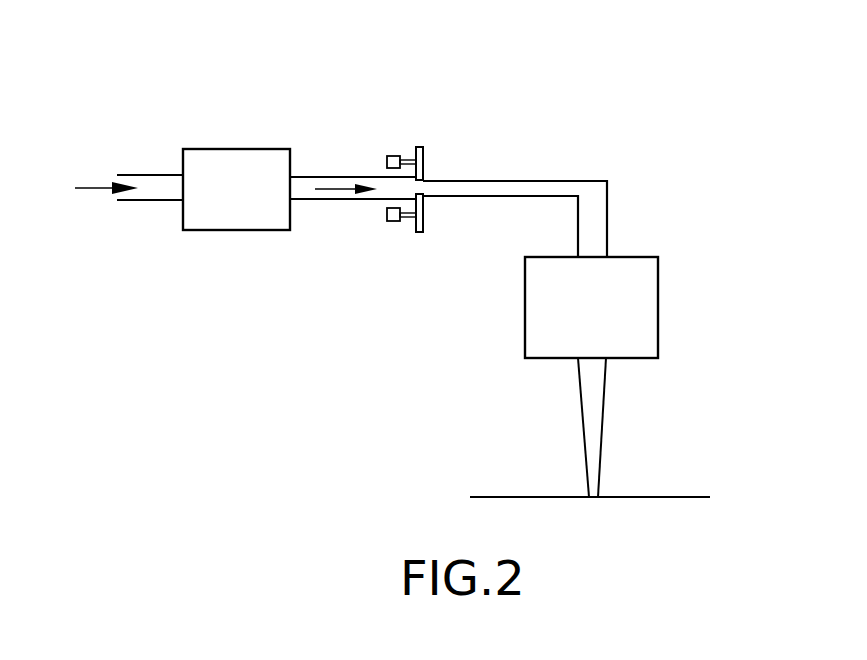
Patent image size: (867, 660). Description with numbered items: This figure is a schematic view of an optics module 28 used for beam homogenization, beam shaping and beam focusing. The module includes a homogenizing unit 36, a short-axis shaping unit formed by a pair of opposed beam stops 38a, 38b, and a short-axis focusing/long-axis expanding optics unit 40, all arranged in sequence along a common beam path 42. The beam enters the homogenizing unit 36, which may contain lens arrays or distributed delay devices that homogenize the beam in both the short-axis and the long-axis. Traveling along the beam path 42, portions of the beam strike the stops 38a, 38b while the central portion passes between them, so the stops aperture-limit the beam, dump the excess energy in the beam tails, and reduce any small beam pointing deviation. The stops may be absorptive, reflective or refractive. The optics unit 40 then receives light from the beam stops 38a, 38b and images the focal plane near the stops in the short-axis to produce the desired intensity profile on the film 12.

The film 12 is at (502, 497).
The optics module 28 is at (688, 113).
The homogenizing unit 36 is at (237, 149).
The beam stop 38a is at (424, 167).
The beam stop 38b is at (425, 213).
The short-axis focusing/long-axis expanding optics unit 40 is at (658, 308).
The beam path 42 is at (588, 181).